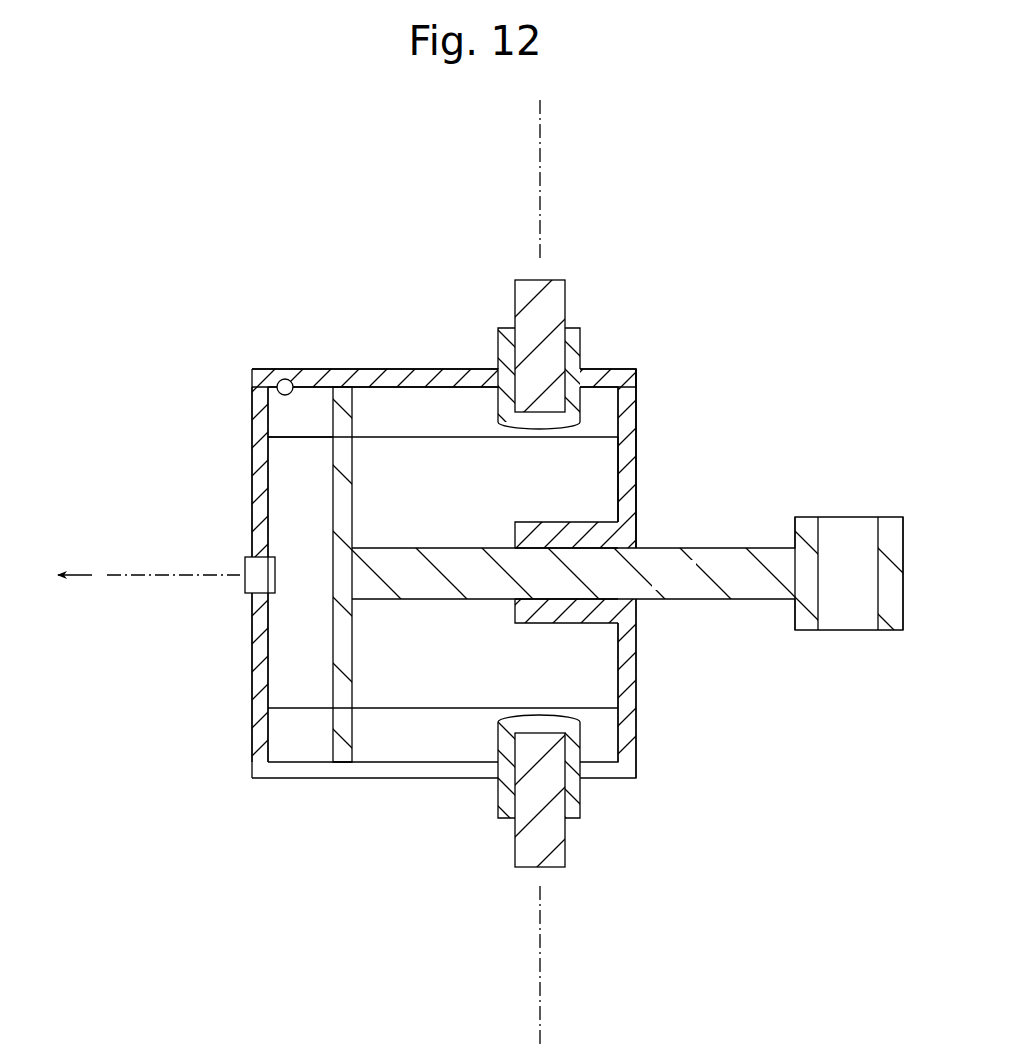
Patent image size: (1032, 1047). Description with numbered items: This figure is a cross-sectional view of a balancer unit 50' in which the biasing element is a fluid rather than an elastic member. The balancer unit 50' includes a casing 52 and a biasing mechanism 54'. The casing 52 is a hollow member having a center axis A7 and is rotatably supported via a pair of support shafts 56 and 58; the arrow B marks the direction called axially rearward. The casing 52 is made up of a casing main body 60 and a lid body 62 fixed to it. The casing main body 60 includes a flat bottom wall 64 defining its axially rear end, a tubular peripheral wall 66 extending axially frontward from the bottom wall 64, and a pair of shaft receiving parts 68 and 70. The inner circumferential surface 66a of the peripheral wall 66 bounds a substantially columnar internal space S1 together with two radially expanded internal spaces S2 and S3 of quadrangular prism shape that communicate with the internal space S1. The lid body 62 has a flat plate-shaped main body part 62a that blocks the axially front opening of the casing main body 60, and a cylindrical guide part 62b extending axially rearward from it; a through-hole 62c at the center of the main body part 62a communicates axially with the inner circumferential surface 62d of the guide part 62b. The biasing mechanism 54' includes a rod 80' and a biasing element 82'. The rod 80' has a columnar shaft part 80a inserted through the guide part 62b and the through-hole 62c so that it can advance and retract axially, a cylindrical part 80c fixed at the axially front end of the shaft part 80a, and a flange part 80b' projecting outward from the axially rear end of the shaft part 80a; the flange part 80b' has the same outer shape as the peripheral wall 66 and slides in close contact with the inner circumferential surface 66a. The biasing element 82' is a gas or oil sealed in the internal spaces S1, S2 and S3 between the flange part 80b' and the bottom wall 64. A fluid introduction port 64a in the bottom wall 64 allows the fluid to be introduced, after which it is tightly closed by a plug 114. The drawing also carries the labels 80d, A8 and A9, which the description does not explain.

The balancer unit 50' is at (475, 572).
The casing 52 is at (657, 362).
The biasing mechanism 54' is at (249, 574).
The support shaft 56 is at (553, 867).
The support shaft 58 is at (548, 280).
The casing main body 60 is at (250, 387).
The lid body 62 is at (640, 460).
The main body part 62a is at (640, 415).
The guide part 62b is at (555, 540).
The through-hole 62c is at (625, 598).
The inner circumferential surface 62d is at (547, 598).
The bottom wall 64 is at (260, 503).
The fluid introduction port 64a is at (245, 560).
The peripheral wall 66 is at (385, 368).
The inner circumferential surface 66a is at (280, 380).
The shaft receiving part 68 is at (572, 793).
The shaft receiving part 70 is at (573, 348).
The rod 80' is at (627, 521).
The shaft part 80a is at (692, 585).
The flange part 80b' is at (258, 574).
The cylindrical part 80c is at (890, 618).
The plunger plate lower end 80d is at (342, 766).
The biasing element 82' is at (300, 464).
The plug 114 is at (243, 585).
The internal space S1 is at (492, 480).
The internal space S2 is at (398, 745).
The internal space S3 is at (398, 420).
The center axis A7 is at (120, 577).
The axis A8 is at (540, 977).
The axis A9 is at (540, 170).
The arrow B is at (63, 576).